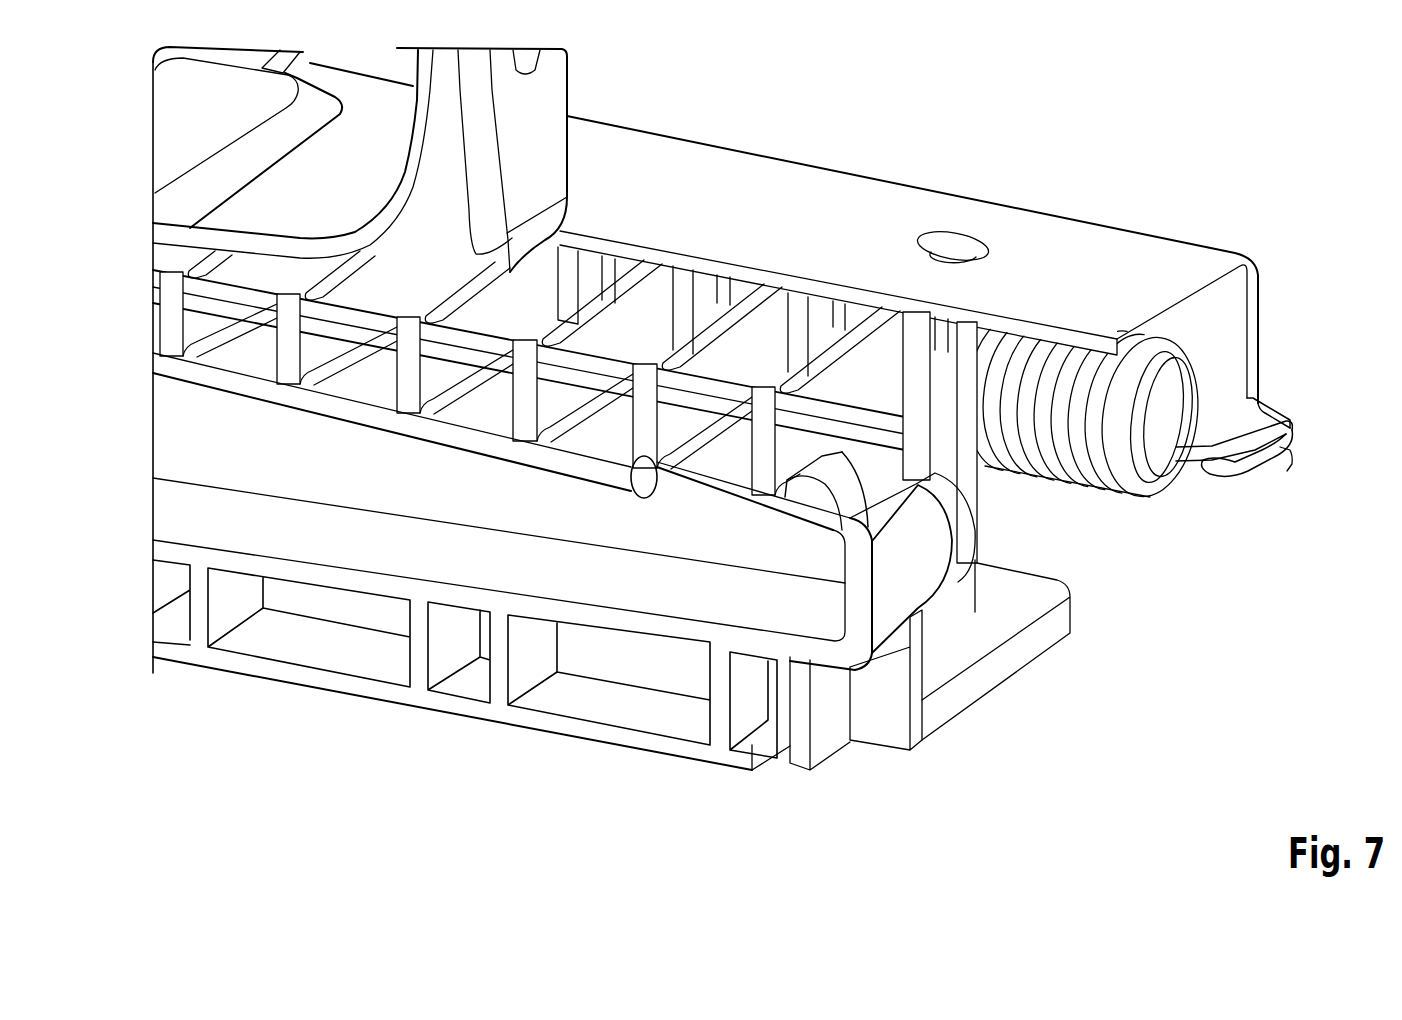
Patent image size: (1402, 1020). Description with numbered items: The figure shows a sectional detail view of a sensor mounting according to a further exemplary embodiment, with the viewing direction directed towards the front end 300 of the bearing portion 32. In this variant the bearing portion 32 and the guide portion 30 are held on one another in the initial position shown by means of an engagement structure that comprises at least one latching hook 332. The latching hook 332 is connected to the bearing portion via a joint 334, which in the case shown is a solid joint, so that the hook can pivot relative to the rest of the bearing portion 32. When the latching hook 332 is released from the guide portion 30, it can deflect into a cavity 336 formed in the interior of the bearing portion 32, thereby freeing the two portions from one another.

The guide portion 30 is at (577, 453).
The bearing portion 32 is at (917, 560).
The front end 300 is at (872, 622).
The latching hook 332 is at (830, 482).
The joint 334 is at (641, 495).
The cavity 336 is at (736, 550).